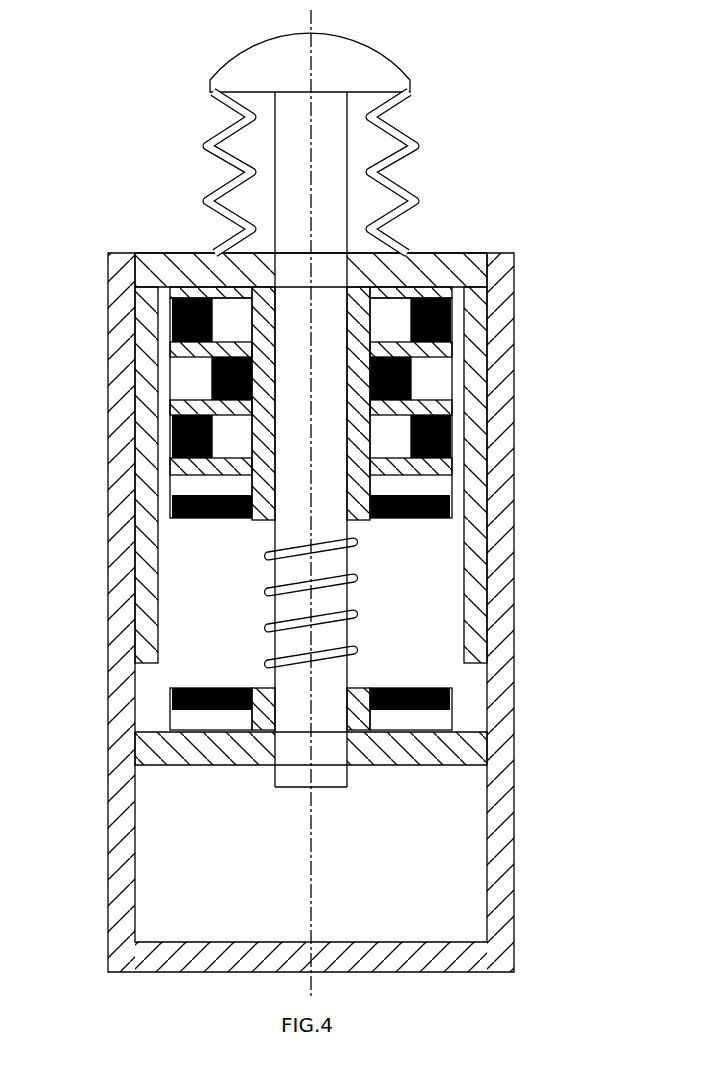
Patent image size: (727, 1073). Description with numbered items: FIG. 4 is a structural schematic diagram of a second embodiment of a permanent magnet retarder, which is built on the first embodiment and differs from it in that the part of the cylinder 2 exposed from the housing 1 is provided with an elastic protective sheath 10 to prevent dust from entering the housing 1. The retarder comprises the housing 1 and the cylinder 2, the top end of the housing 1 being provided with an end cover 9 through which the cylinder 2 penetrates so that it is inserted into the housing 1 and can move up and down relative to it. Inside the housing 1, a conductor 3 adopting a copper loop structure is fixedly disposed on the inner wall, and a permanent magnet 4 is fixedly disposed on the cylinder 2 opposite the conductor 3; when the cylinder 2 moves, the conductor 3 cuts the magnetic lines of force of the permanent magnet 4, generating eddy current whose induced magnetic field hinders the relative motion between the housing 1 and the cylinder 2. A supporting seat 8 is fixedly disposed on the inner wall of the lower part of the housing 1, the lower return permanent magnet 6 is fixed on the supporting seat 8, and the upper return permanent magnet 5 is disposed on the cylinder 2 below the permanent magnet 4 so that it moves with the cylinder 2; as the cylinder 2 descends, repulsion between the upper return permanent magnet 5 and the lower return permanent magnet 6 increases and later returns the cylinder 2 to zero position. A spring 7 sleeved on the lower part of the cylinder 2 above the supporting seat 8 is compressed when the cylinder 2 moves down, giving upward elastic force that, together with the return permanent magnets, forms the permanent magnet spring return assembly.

The housing 1 is at (115, 680).
The cylinder 2 is at (330, 220).
The conductor 3 is at (143, 347).
The permanent magnet 4 is at (200, 398).
The upper return permanent magnet 5 is at (453, 517).
The lower return permanent magnet 6 is at (433, 718).
The spring 7 is at (277, 598).
The supporting seat 8 is at (473, 767).
The end cover 9 is at (443, 277).
The elastic protective sheath 10 is at (213, 152).